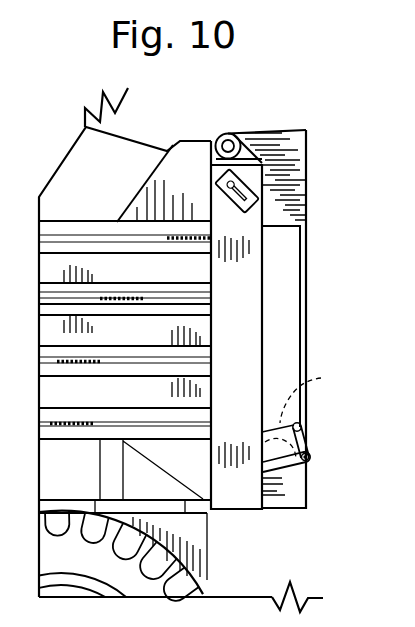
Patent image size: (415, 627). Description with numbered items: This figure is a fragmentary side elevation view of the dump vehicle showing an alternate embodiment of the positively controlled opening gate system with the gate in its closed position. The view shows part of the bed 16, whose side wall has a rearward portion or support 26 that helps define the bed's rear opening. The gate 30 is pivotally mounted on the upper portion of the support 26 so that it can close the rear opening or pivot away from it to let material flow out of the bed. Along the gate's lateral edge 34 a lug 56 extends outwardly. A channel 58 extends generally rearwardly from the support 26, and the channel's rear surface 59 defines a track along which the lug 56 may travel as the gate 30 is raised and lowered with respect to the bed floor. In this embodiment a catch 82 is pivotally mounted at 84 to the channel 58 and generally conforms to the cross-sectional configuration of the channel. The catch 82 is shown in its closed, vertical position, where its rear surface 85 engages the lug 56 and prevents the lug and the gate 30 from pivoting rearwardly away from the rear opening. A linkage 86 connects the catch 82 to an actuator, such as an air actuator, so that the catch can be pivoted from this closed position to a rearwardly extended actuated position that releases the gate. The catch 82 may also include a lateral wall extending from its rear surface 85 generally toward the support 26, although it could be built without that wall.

The bed 16 is at (132, 147).
The support 26 is at (251, 354).
The gate 30 is at (262, 131).
The lateral edge 34 is at (307, 152).
The channel 58 is at (296, 300).
The rear surface 59 is at (303, 312).
The lug 56 is at (305, 415).
The pivot mounting 84 is at (302, 428).
The catch 82 is at (314, 453).
The rear surface 85 is at (312, 460).
The linkage 86 is at (282, 472).